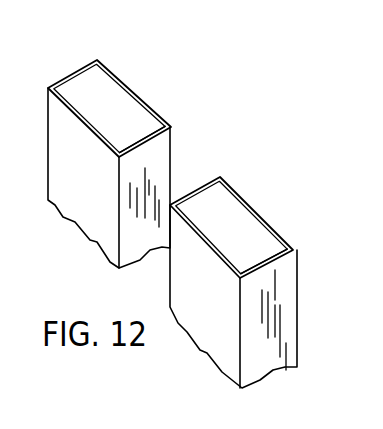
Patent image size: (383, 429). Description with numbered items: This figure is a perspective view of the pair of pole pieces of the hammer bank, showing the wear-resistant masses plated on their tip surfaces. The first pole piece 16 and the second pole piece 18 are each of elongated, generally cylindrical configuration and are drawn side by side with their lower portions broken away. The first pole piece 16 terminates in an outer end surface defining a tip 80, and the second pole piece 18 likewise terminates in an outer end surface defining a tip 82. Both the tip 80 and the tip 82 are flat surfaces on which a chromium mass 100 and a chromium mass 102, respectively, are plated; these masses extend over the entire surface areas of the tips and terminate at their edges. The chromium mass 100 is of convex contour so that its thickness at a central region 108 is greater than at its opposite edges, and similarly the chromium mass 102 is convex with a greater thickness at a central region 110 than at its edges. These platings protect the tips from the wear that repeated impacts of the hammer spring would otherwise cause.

The first pole piece 16 is at (220, 360).
The second pole piece 18 is at (103, 238).
The tip of the first pole piece 80 is at (275, 267).
The tip of the second pole piece 82 is at (147, 145).
The chromium mass 100 is at (223, 198).
The chromium mass 102 is at (102, 78).
The central region 108 is at (252, 237).
The central region 110 is at (127, 117).